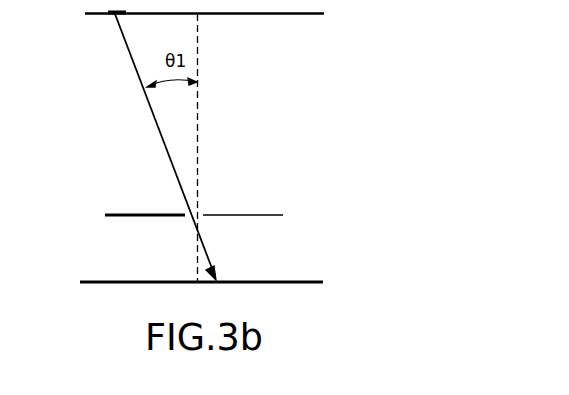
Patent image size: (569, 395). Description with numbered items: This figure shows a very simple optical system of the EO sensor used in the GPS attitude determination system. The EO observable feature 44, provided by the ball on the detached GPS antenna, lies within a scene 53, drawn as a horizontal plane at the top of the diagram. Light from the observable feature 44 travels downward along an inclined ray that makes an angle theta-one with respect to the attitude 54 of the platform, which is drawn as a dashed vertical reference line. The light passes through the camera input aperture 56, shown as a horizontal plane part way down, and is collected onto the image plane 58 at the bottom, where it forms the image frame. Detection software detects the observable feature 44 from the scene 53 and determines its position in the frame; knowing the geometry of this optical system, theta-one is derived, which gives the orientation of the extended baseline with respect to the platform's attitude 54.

The EO observable feature 44 is at (115, 15).
The scene 53 is at (304, 15).
The attitude 54 is at (199, 52).
The camera input aperture 56 is at (110, 214).
The image plane 58 is at (93, 281).